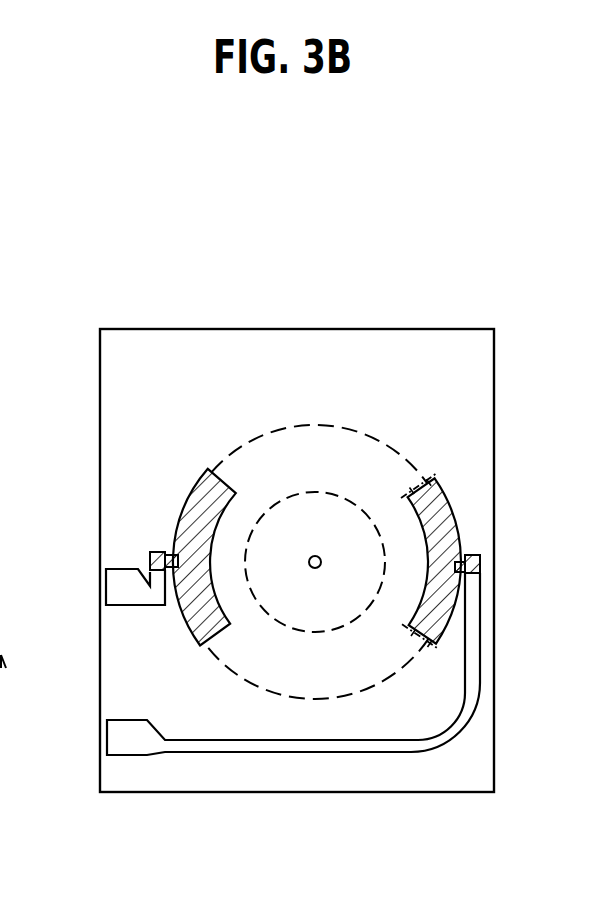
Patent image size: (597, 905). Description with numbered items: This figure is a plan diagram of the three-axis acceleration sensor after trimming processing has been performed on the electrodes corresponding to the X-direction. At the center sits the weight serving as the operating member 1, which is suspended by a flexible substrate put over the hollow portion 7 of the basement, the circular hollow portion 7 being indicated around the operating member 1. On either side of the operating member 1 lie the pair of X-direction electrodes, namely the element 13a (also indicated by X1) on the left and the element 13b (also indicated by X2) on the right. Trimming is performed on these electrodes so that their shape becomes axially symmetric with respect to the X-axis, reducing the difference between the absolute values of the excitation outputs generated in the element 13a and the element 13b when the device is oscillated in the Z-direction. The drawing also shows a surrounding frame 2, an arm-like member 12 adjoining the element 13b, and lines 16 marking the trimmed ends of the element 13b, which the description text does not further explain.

The operating member 1 is at (308, 525).
The base plate 2 is at (270, 793).
The hollow portion 7 is at (253, 470).
The holder arm 12 is at (472, 695).
The element X1 13a is at (175, 532).
The element X2 13b is at (458, 545).
The guide lines 16 is at (410, 624).